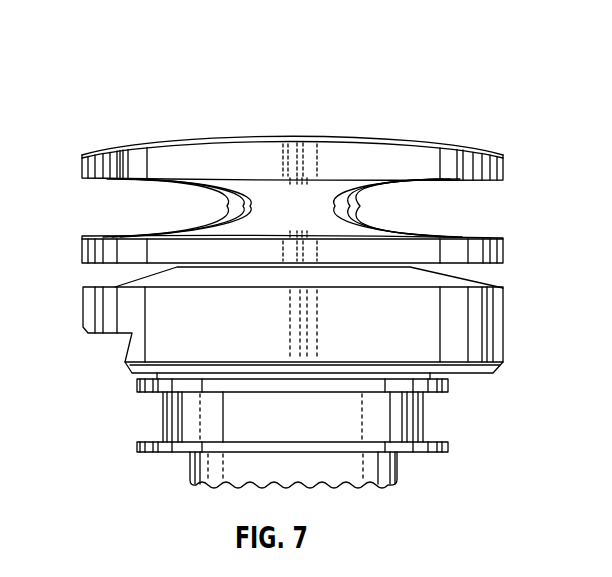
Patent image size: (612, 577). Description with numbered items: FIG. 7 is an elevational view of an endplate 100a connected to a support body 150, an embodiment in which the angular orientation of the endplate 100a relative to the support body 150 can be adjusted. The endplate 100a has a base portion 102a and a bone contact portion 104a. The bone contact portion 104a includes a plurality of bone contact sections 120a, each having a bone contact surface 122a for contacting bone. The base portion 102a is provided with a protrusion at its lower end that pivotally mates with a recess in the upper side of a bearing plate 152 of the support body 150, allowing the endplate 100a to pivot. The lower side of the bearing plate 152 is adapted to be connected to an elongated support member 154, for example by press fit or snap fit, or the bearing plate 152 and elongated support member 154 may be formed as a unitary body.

The endplate 100a is at (114, 46).
The bone contact portion 104a is at (503, 150).
The bone contact sections 120a is at (227, 142).
The bone contact surface 122a is at (295, 138).
The base portion 102a is at (505, 250).
The bearing plate 152 is at (510, 321).
The support body 150 is at (160, 414).
The elongated support member 154 is at (190, 466).